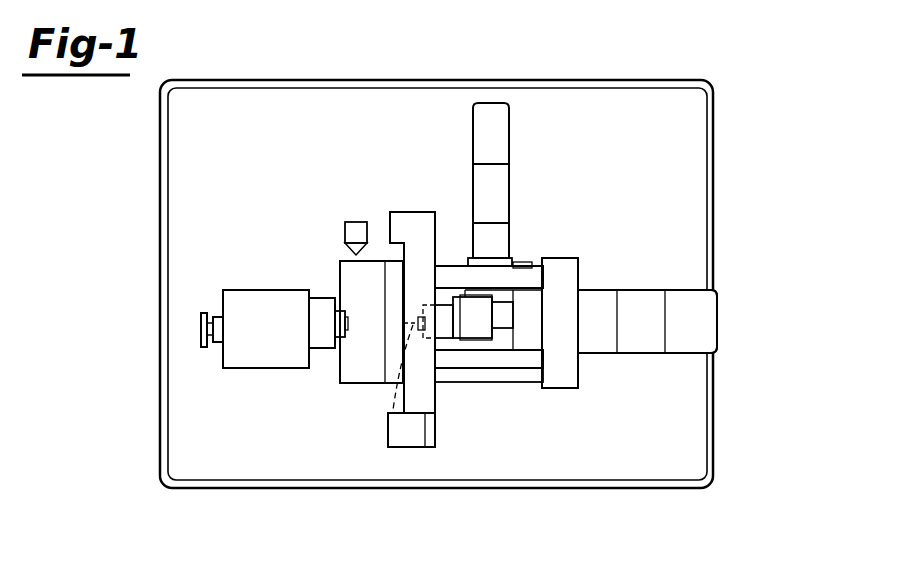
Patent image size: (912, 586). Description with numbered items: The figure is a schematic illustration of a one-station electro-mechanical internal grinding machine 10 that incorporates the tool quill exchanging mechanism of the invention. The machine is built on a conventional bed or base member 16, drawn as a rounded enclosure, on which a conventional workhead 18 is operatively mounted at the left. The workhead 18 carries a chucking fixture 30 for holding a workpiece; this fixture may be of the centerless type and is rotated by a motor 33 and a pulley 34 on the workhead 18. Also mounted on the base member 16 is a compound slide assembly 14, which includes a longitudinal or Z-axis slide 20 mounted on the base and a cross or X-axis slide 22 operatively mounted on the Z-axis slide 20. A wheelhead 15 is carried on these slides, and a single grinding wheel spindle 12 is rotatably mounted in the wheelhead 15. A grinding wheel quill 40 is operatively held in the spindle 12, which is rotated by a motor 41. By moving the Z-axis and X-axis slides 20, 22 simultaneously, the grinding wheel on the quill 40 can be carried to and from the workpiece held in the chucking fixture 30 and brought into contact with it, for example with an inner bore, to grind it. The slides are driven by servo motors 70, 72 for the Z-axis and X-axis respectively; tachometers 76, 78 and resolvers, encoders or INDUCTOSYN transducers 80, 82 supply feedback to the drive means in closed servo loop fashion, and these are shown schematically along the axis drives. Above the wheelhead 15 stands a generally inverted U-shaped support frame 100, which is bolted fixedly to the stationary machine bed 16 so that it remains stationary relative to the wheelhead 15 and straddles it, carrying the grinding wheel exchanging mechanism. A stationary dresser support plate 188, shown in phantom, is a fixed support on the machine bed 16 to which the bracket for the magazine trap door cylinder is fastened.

The internal grinding machine 10 is at (268, 81).
The base member 16 is at (192, 163).
The pulley 34 is at (206, 312).
The motor 33 is at (222, 372).
The workhead 18 is at (268, 367).
The chucking fixture 30 is at (318, 303).
The Z-axis slide 20 is at (350, 383).
The dresser support plate 188 is at (352, 226).
The support frame 100 is at (417, 210).
The grinding wheel quill 40 is at (398, 403).
The grinding wheel spindle 12 is at (443, 335).
The motor 41 is at (485, 308).
The wheelhead 15 is at (483, 347).
The X-axis slide 22 is at (530, 323).
The compound slide assembly 14 is at (520, 371).
The servo motor 72 is at (507, 237).
The tachometer 78 is at (504, 193).
The transducer 82 is at (500, 134).
The servo motor 70 is at (592, 302).
The tachometer 76 is at (640, 302).
The transducer 80 is at (693, 305).